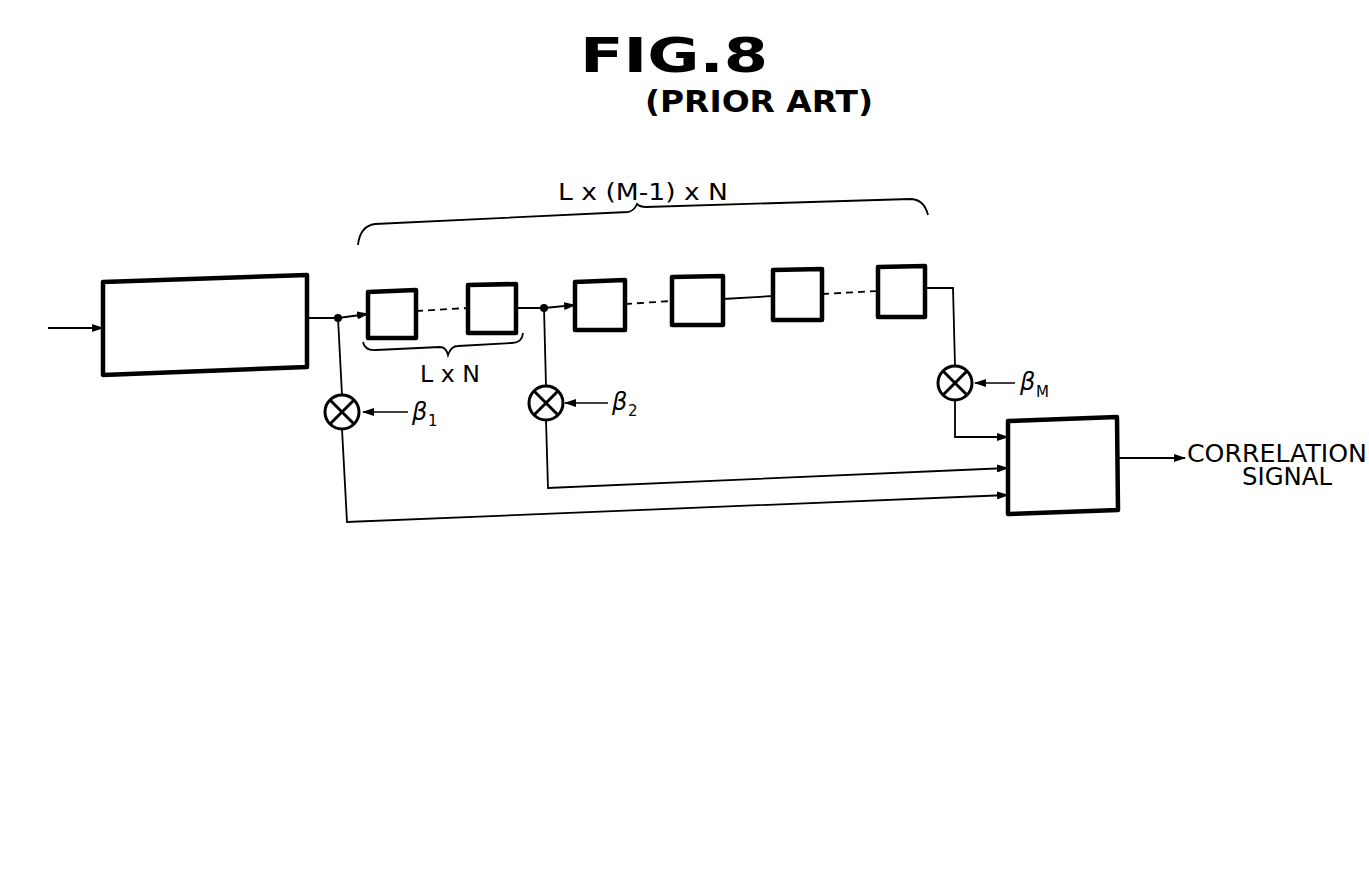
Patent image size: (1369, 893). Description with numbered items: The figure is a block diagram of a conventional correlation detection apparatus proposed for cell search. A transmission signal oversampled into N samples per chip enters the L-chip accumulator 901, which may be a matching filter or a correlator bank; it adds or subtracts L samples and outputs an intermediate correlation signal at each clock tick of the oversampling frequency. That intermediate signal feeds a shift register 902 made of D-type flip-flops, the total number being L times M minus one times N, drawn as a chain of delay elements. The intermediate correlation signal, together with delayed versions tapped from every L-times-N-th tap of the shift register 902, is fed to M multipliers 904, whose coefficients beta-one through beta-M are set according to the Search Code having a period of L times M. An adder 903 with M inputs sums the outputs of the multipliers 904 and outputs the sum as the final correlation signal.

The L-chip accumulator 901 is at (165, 280).
The shift register 902 is at (468, 286).
The adder 903 is at (1043, 514).
The multiplier 904 is at (325, 414).